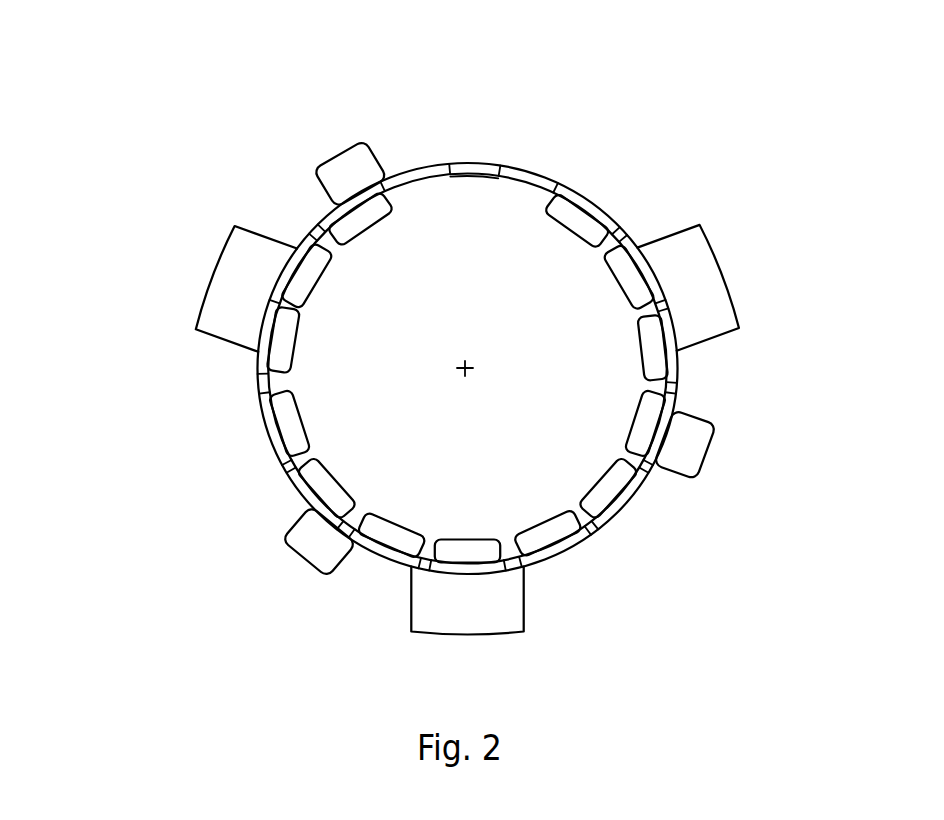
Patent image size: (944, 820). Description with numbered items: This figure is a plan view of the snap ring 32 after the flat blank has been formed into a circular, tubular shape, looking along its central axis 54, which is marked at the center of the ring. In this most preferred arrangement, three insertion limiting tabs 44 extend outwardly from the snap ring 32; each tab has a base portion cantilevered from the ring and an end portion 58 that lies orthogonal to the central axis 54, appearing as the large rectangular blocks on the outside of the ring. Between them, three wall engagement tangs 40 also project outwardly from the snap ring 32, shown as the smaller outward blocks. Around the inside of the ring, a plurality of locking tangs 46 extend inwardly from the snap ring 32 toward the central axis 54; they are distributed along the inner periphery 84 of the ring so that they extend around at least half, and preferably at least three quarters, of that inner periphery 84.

The snap ring 32 is at (638, 148).
The wall engagement tangs 40 is at (370, 184).
The insertion limiting tabs 44 is at (210, 277).
The locking tangs 46 is at (545, 528).
The central axis 54 is at (468, 374).
The end portion 58 is at (709, 304).
The inner periphery 84 is at (521, 183).